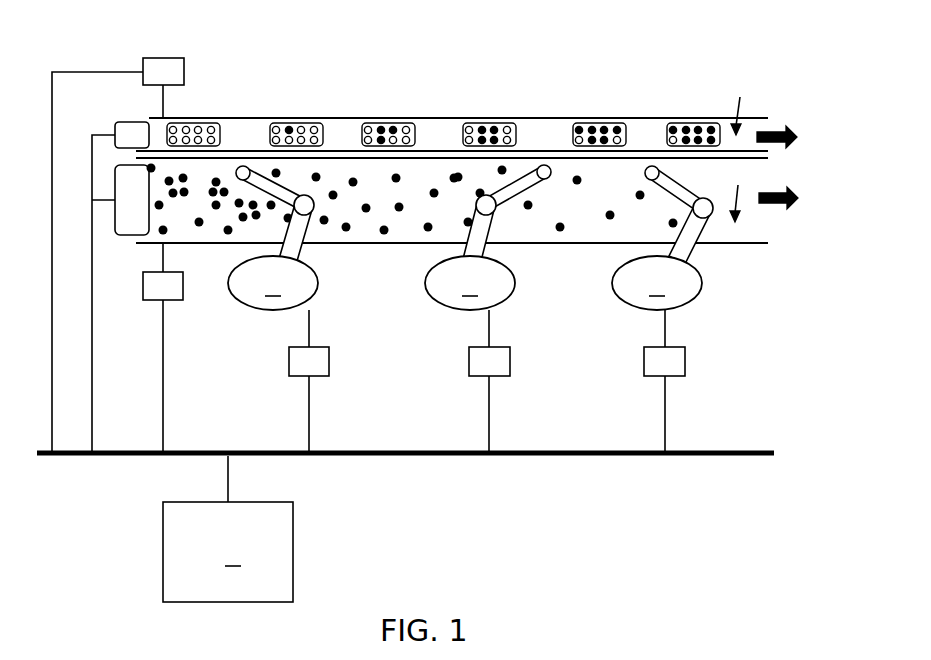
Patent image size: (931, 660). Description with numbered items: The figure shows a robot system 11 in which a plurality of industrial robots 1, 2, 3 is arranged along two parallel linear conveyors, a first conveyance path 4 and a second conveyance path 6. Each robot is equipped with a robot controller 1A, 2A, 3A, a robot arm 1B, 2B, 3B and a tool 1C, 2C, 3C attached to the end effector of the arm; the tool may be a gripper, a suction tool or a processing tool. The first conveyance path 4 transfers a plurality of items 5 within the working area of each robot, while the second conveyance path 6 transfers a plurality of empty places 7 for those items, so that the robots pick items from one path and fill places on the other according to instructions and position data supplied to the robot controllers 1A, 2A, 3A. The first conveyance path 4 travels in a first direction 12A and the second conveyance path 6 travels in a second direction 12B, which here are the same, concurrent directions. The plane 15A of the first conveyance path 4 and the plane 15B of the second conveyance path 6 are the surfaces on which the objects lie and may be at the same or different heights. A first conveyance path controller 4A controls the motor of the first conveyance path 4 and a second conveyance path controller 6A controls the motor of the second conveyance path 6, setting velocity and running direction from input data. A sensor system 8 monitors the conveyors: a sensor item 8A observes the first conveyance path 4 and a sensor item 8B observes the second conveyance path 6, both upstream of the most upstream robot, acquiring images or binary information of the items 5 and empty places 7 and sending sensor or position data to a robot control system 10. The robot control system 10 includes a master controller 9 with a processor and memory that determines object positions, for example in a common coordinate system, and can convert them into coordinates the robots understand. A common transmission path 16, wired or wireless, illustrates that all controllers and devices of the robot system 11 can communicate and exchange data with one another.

The industrial robot 1 is at (291, 199).
The robot controller 1A is at (329, 360).
The robot arm 1B is at (298, 252).
The tool 1C is at (243, 166).
The industrial robot 2 is at (503, 198).
The robot controller 2A is at (510, 360).
The robot arm 2B is at (482, 250).
The tool 2C is at (545, 165).
The industrial robot 3 is at (677, 198).
The robot controller 3A is at (685, 360).
The robot arm 3B is at (687, 252).
The tool 3C is at (652, 165).
The first conveyance path 4 is at (758, 247).
The first conveyance path controller 4A is at (183, 285).
The item 5 is at (402, 207).
The second conveyance path 6 is at (530, 117).
The second conveyance path controller 6A is at (178, 72).
The empty place 7 is at (310, 125).
The sensor system 8 is at (98, 110).
The sensor item 8A is at (123, 235).
The sensor item 8B is at (130, 125).
The master controller 9 is at (228, 529).
The robot control system 10 is at (343, 485).
The robot system 11 is at (281, 52).
The first direction 12A is at (782, 207).
The second direction 12B is at (778, 145).
The plane of the first conveyance path 15A is at (742, 191).
The plane of the second conveyance path 15B is at (742, 104).
The common transmission path 16 is at (680, 456).